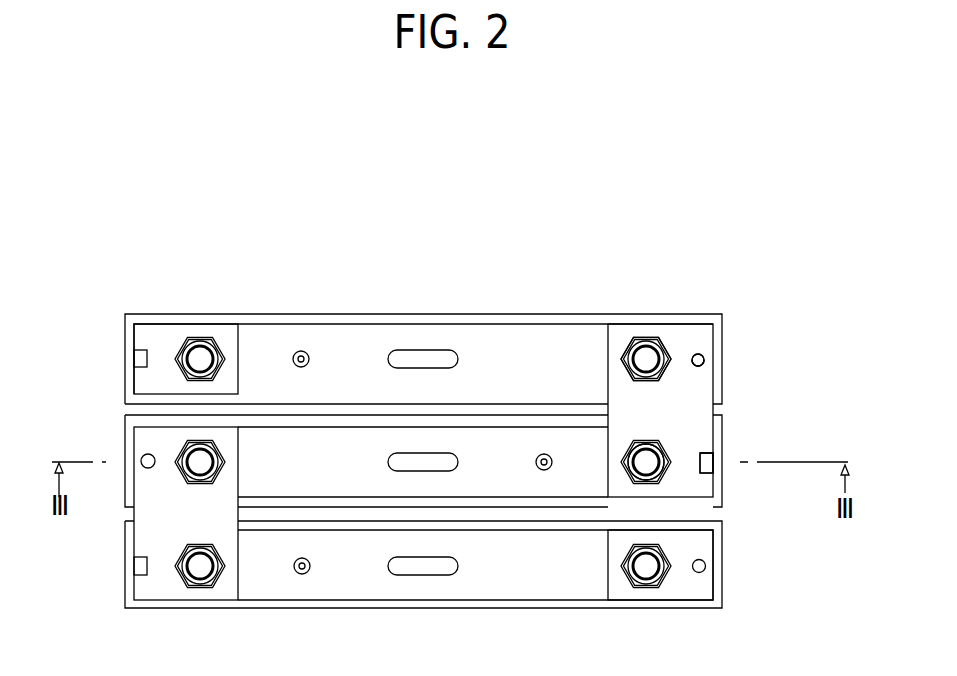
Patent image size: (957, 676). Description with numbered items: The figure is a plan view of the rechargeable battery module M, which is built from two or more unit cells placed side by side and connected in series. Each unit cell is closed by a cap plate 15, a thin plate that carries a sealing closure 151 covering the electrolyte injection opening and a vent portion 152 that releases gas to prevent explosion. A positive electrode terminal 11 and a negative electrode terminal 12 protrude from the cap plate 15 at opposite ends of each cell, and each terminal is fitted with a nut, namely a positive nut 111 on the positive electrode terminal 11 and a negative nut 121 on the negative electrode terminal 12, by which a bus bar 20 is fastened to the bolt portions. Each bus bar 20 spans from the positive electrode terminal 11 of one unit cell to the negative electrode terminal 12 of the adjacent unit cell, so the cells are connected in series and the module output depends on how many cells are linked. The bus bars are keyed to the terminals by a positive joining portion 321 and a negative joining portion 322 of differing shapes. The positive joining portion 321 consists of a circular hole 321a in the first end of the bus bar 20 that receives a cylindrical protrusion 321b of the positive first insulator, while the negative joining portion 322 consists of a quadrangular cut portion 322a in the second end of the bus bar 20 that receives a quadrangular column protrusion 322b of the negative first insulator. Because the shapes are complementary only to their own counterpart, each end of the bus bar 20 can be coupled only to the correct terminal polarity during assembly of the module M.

The rechargeable battery module M is at (525, 203).
The positive electrode terminal 11 is at (651, 352).
The positive nut 111 is at (638, 337).
The negative electrode terminal 12 is at (197, 352).
The negative nut 121 is at (650, 445).
The cap plate 15 is at (500, 588).
The sealing closure 151 is at (308, 571).
The vent portion 152 is at (422, 578).
The bus bar 20 is at (618, 379).
The positive joining portion 321 is at (808, 330).
The circular hole 321a is at (704, 359).
The cylindrical protrusion 321b is at (695, 366).
The negative joining portion 322 is at (840, 585).
The quadrangular cut portion 322a is at (703, 466).
The quadrangular column protrusion 322b is at (705, 464).